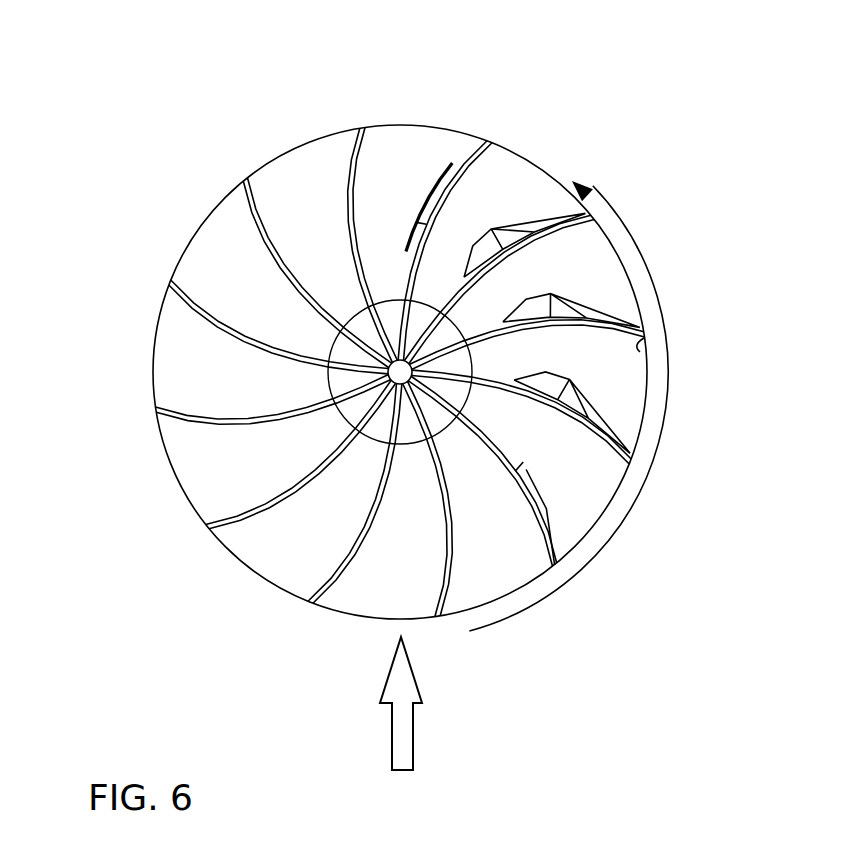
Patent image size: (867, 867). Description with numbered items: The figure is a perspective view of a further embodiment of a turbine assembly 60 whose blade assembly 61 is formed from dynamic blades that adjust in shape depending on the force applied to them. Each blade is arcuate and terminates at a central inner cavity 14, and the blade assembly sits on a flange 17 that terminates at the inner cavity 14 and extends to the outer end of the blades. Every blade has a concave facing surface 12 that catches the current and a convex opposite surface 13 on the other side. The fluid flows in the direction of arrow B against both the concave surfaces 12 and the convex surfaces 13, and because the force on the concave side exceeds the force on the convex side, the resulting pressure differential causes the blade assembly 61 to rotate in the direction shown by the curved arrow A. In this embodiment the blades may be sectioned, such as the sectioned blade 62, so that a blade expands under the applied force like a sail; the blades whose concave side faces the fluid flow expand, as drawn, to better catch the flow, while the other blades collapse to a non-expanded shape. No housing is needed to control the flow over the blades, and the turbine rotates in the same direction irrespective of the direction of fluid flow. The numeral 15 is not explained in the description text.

The concave facing surface 12 is at (447, 207).
The convex opposite surface 13 is at (452, 167).
The inner cavity 14 is at (393, 358).
The hub plate 15 is at (390, 377).
The flange 17 is at (190, 365).
The turbine assembly 60 is at (180, 258).
The blade assembly 61 is at (503, 157).
The sectioned blade 62 is at (647, 355).
The curved arrow A is at (660, 462).
The arrow B is at (413, 737).